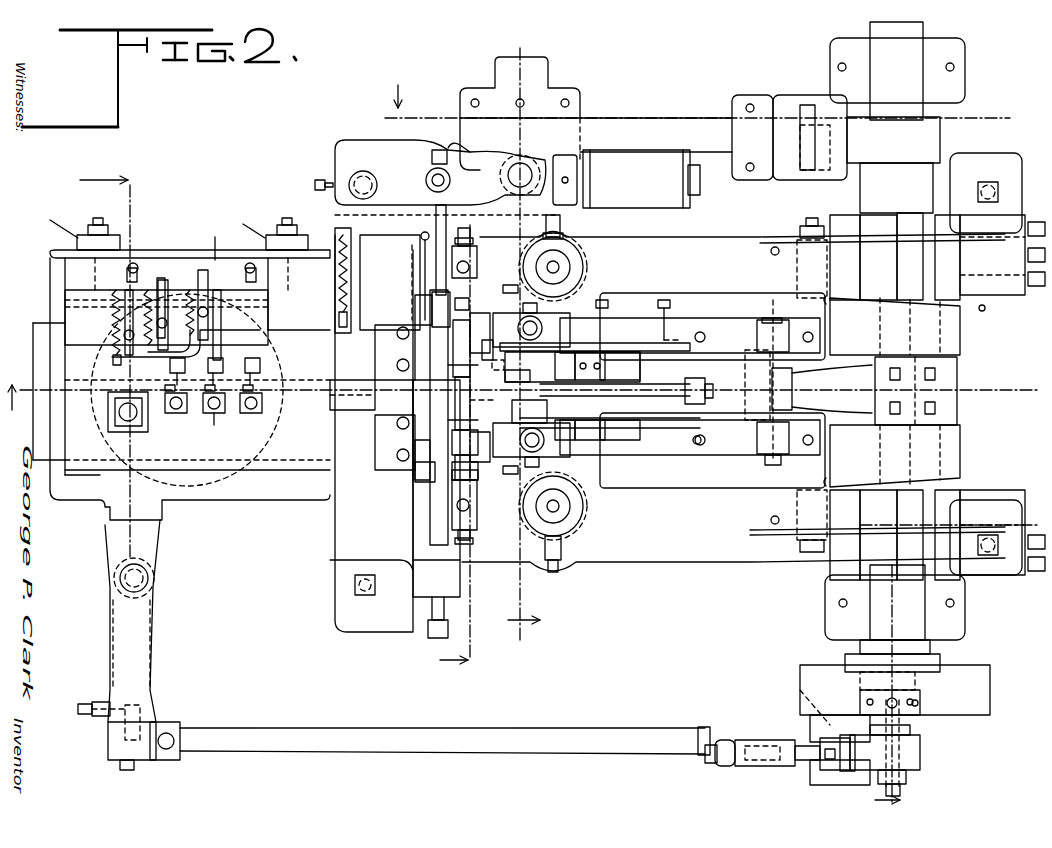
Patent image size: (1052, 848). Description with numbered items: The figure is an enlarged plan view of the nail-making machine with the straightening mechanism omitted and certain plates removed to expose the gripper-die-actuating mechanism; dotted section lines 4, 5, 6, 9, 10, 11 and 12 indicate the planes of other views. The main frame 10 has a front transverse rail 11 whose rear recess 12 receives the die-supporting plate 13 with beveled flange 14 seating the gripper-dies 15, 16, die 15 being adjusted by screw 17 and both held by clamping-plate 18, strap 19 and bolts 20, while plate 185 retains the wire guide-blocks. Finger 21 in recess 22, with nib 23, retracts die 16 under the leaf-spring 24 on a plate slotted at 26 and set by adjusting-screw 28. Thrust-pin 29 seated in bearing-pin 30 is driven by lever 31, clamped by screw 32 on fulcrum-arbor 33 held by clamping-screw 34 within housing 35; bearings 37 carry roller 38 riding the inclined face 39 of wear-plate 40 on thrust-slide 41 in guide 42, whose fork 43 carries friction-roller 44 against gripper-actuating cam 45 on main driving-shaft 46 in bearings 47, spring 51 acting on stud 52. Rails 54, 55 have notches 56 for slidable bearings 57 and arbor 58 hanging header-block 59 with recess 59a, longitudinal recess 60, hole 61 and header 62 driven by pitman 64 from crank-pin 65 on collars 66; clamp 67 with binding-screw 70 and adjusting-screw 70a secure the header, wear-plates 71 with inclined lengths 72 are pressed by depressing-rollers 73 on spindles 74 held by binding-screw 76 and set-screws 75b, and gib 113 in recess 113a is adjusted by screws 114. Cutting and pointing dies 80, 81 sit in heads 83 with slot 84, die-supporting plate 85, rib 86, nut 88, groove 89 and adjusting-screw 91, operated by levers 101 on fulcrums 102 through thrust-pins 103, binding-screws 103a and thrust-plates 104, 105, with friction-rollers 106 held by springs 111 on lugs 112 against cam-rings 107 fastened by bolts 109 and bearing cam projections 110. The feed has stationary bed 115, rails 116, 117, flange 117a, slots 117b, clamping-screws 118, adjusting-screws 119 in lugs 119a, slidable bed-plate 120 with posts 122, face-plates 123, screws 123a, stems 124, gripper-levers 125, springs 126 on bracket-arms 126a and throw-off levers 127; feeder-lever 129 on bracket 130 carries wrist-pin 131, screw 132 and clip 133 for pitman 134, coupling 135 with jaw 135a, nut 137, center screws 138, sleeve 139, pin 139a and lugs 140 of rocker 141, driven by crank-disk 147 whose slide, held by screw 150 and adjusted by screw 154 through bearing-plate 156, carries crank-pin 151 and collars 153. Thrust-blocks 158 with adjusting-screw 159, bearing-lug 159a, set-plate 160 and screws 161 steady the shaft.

The section line 4 4 is at (1037, 391).
The section line 5 5 is at (534, 342).
The section line 6 6 is at (457, 457).
The section line 9 9 is at (701, 106).
The main frame 10 is at (672, 562).
The front transverse rail 11 is at (305, 558).
The longitudinal recess 12 is at (413, 460).
The die-supporting plate 13 is at (420, 480).
The flange 14 is at (428, 488).
The gripper-die 15 is at (430, 530).
The movable gripper-die 16 is at (432, 300).
The screw 17 is at (430, 630).
The clamping-plate 18 is at (415, 310).
The strap 19 is at (380, 350).
The bolts 20 is at (396, 333).
The finger 21 is at (420, 252).
The recess 22 is at (418, 295).
The nib 23 is at (455, 350).
The retracting-spring 24 is at (411, 268).
The longitudinal slot 26 is at (350, 276).
The adjusting-screw 28 is at (336, 232).
The thrust-pin 29 is at (437, 232).
The headed bearing-pin 30 is at (440, 150).
The lever 31 is at (445, 177).
The screw 32 is at (426, 180).
The fulcrum-arbor 33 is at (370, 182).
The clamping-screw 34 is at (318, 180).
The housing 35 is at (456, 143).
The bearings 37 is at (550, 190).
The roller 38 is at (505, 192).
The inclined face 39 is at (528, 160).
The wear-plate 40 is at (520, 160).
The thrust-slide 41 is at (610, 135).
The guide 42 is at (548, 118).
The fork 43 is at (815, 110).
The friction-roller 44 is at (805, 150).
The gripper-actuating cam 45 is at (893, 150).
The main driving-shaft 46 is at (870, 225).
The bearings 47 is at (925, 55).
The spring 51 is at (640, 185).
The stud 52 is at (698, 180).
The rail 54 is at (680, 328).
The rail 55 is at (712, 450).
The longitudinal notches 56 is at (722, 335).
The slidable bearings 57 is at (765, 325).
The pivotal arbor 58 is at (772, 400).
The header-block 59 is at (572, 367).
The recess 59a is at (758, 372).
The longitudinal recess 60 is at (610, 427).
The hole 61 is at (702, 400).
The header 62 is at (625, 396).
The pitman 64 is at (822, 389).
The crank-pin 65 is at (957, 368).
The collars 66 is at (895, 392).
The bifurcated clamp 67 is at (605, 355).
The binding-screw 70 is at (620, 396).
The adjusting-screw 70a is at (685, 435).
The wear-plates 71 is at (590, 378).
The inclined lengths 72 is at (564, 378).
The depressing-rollers 73 is at (523, 396).
The spindles 74 is at (543, 322).
The set-screws 75b is at (525, 300).
The binding-screw 76 is at (525, 315).
The cutting and pointing die 80 is at (492, 400).
The cutting and pointing die 81 is at (484, 331).
The annular head 83 is at (472, 479).
The vertical slot 84 is at (450, 467).
The die-supporting plate 85 is at (454, 440).
The rib 86 is at (454, 392).
The nut 88 is at (483, 387).
The dovetailed groove 89 is at (496, 337).
The adjusting-screw 91 is at (454, 483).
The levers 101 is at (725, 243).
The fulcrum 102 is at (570, 262).
The thrust-pin 103 is at (466, 232).
The binding-screw 103a is at (480, 384).
The thrust-plate 104 is at (470, 505).
The thrust-plate 105 is at (470, 267).
The friction-rollers 106 is at (828, 270).
The cam-ring 107 is at (935, 468).
The bolts 109 is at (828, 302).
The cam projection 110 is at (912, 305).
The springs 111 is at (880, 245).
The lug 112 is at (975, 220).
The tightening-gib 113 is at (662, 300).
The recess 113a is at (690, 310).
The screws 114 is at (620, 286).
The stationary bed 115 is at (265, 500).
The rail 116 is at (302, 470).
The shiftable rail 117 is at (181, 362).
The lateral flange 117a is at (222, 241).
The slots 117b is at (133, 263).
The clamping-screws 118 is at (135, 268).
The adjusting-screws 119 is at (285, 206).
The upstanding lugs 119a is at (151, 220).
The slidable bed-plate 120 is at (75, 485).
The posts 122 is at (180, 413).
The grooved face-plate 123 is at (292, 398).
The screw 123a is at (225, 413).
The pointed stem 124 is at (180, 270).
The gripper-lever 125 is at (140, 358).
The spring 126 is at (150, 285).
The bracket-arm 126a is at (116, 290).
The throw-off lever 127 is at (208, 280).
The feeder-lever 129 is at (140, 632).
The bracket 130 is at (112, 565).
The wrist-pin 131 is at (125, 770).
The screw 132 is at (80, 700).
The clip 133 is at (158, 720).
The pitman 134 is at (335, 752).
The coupling 135 is at (748, 766).
The jaw 135a is at (810, 760).
The nut 137 is at (725, 740).
The center screws 138 is at (825, 748).
The sleeve 139 is at (843, 770).
The pin 139a is at (799, 696).
The lugs 140 is at (840, 718).
The rocker 141 is at (920, 750).
The crank-disk 147 is at (985, 695).
The screw 150 is at (915, 683).
The crank-pin 151 is at (900, 790).
The collars 153 is at (906, 775).
The screw 154 is at (885, 698).
The bearing-plate 156 is at (916, 706).
The thrust-blocks 158 is at (910, 218).
The adjusting-screw 159 is at (978, 295).
The bearing-lug 159a is at (975, 490).
The set-plate 160 is at (942, 397).
The screws 161 is at (988, 236).
The plate 185 is at (352, 395).